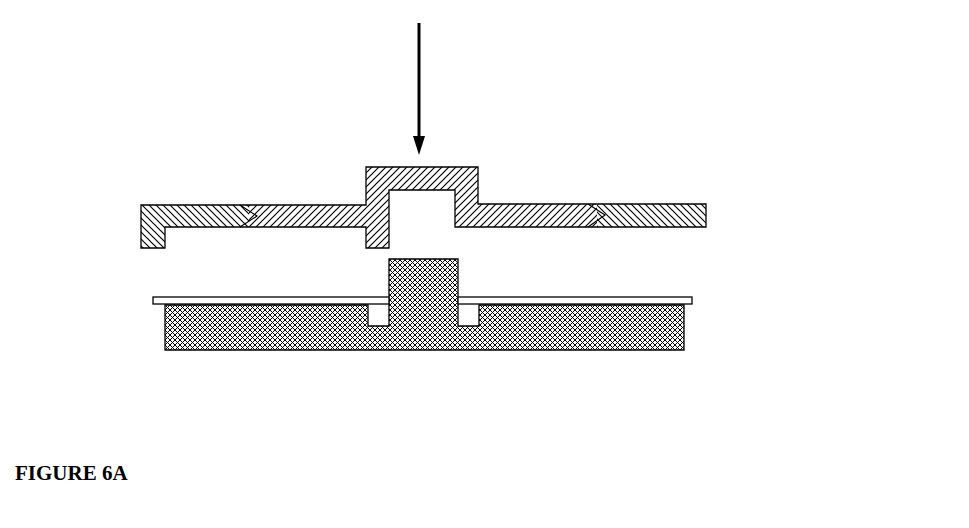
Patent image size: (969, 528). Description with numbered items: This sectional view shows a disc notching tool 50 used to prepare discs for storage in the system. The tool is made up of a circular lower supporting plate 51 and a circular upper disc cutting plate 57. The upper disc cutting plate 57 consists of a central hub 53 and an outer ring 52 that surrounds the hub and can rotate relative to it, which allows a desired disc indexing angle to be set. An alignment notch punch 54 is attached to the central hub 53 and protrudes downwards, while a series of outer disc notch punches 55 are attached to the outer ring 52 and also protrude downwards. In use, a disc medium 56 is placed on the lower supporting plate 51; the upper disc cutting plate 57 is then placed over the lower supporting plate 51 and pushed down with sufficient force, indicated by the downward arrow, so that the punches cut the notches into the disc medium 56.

The disc notching tool 50 is at (700, 73).
The lower supporting plate 51 is at (637, 355).
The outer ring 52 is at (208, 200).
The central hub 53 is at (457, 158).
The alignment notch punch 54 is at (376, 256).
The outer disc notch punch 55 is at (152, 256).
The disc medium 56 is at (701, 288).
The upper disc cutting plate 57 is at (596, 185).